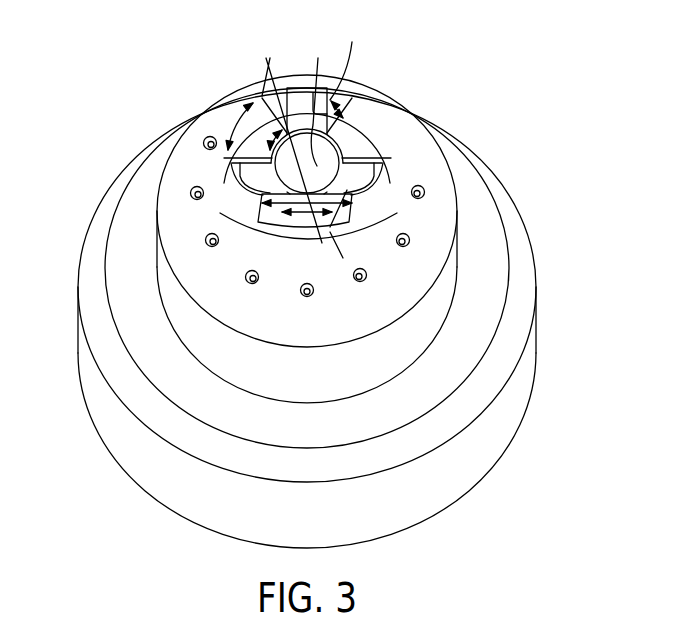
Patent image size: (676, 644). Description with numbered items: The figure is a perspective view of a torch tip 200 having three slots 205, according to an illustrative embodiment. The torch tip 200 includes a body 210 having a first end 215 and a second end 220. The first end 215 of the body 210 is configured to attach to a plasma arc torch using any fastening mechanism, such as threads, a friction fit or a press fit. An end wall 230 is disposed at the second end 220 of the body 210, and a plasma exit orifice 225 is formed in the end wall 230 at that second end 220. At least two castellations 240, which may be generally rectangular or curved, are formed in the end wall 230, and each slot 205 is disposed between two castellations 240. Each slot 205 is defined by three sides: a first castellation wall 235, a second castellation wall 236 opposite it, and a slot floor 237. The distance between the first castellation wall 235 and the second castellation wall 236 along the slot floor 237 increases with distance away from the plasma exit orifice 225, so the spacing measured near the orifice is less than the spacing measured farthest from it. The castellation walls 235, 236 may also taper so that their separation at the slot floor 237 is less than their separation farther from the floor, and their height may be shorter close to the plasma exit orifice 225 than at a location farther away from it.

The torch tip 200 is at (58, 68).
The slot 205 is at (375, 131).
The body 210 is at (569, 322).
The first end 215 is at (569, 432).
The second end 220 is at (569, 216).
The plasma exit orifice 225 is at (332, 132).
The end wall 230 is at (247, 223).
The first castellation wall 235 is at (270, 196).
The second castellation wall 236 is at (345, 215).
The slot floor 237 is at (298, 233).
The castellation 240 is at (247, 171).